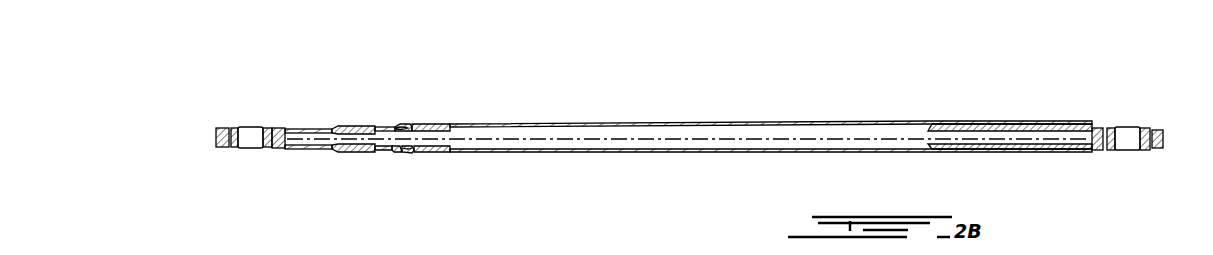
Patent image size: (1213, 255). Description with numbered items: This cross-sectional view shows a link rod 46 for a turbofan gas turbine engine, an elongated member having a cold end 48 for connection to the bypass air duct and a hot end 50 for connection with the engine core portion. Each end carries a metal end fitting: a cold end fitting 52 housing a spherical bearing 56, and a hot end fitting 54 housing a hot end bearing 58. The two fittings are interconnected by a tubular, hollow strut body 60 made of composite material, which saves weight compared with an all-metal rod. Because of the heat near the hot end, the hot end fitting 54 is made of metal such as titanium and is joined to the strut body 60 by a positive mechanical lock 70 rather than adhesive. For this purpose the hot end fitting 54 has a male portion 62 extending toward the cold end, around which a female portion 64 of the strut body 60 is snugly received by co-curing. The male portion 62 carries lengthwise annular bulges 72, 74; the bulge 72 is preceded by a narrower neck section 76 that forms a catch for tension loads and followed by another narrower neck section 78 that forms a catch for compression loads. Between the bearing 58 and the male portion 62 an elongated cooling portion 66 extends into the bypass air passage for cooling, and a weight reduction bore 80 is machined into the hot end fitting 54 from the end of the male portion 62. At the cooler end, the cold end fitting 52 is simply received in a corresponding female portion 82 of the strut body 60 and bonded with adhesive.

The link rod 46 is at (972, 97).
The cold end 48 is at (1104, 129).
The hot end 50 is at (268, 126).
The cold end fitting 52 is at (1085, 163).
The hot end fitting 54 is at (284, 160).
The spherical bearing 56 is at (1128, 150).
The hot end bearing 58 is at (251, 143).
The strut body 60 is at (688, 111).
The male portion 62 is at (408, 110).
The female portion 64 is at (445, 112).
The elongated cooling portion 66 is at (346, 127).
The positive mechanical lock 70 is at (435, 111).
The lengthwise bulge 72 is at (397, 151).
The lengthwise bulge 74 is at (437, 152).
The narrower neck section 76 is at (377, 149).
The narrower neck section 78 is at (410, 152).
The weight reduction bore 80 is at (368, 127).
The female portion 82 is at (912, 124).